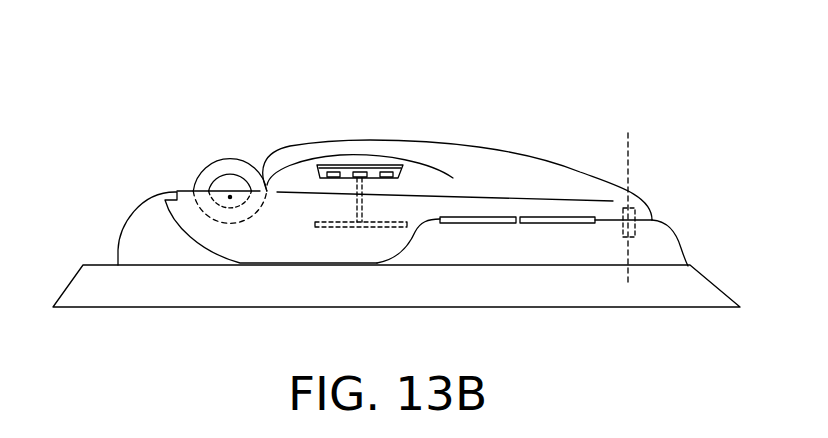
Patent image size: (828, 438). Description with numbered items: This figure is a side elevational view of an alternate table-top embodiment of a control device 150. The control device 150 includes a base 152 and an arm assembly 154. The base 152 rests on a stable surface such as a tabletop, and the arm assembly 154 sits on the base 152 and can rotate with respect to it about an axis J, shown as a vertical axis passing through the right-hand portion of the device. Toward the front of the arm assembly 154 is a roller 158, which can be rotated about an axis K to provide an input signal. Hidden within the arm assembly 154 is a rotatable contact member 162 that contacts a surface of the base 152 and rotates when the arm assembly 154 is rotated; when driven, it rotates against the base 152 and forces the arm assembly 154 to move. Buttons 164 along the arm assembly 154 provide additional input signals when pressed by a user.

The control device 150 is at (184, 81).
The base 152 is at (137, 242).
The arm assembly 154 is at (480, 158).
The roller 158 is at (227, 170).
The rotatable contact member 162 is at (347, 227).
The buttons 164 is at (547, 223).
The axis K is at (230, 196).
The axis J is at (629, 197).